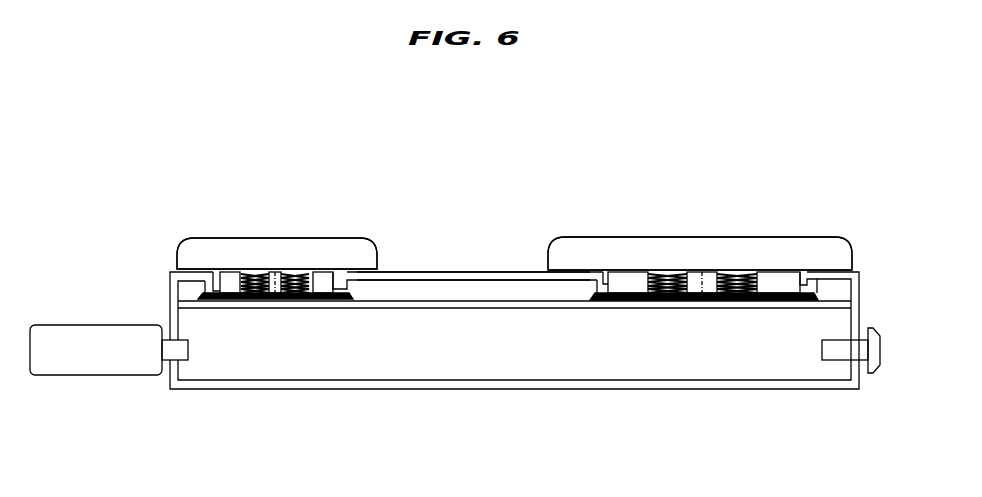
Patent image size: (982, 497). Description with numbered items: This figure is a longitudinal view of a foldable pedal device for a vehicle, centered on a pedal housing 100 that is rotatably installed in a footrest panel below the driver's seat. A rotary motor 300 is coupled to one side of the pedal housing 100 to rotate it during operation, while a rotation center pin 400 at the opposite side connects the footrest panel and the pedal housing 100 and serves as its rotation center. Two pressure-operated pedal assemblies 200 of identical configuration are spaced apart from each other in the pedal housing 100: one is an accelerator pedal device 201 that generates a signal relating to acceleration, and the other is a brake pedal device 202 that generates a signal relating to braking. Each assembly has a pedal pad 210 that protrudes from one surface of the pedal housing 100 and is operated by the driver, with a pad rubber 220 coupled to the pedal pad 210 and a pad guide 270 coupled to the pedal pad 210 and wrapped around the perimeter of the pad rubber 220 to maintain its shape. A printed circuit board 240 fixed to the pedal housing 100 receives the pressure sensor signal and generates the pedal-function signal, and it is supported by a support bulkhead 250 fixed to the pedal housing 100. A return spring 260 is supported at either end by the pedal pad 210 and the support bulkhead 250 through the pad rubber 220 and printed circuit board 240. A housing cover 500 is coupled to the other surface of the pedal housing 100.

The pedal housing 100 is at (482, 272).
The pressure-operated pedal assembly 200 is at (513, 204).
The accelerator pedal device 201 is at (197, 228).
The brake pedal device 202 is at (828, 229).
The pedal pad 210 is at (283, 248).
The pad rubber 220 is at (227, 272).
The printed circuit board 240 is at (340, 300).
The support bulkhead 250 is at (495, 309).
The return spring 260 is at (287, 303).
The pad guide 270 is at (326, 285).
The rotary motor 300 is at (103, 335).
The rotation center pin 400 is at (880, 350).
The housing cover 500 is at (423, 389).